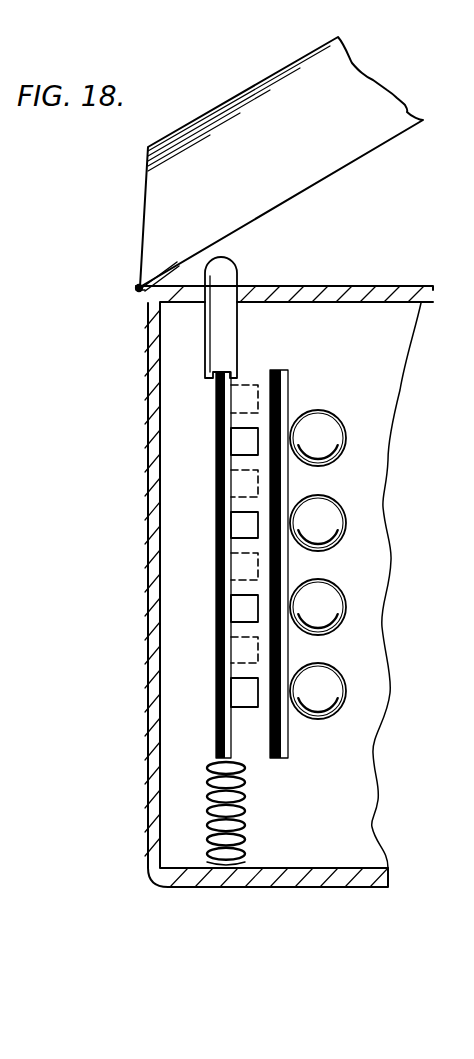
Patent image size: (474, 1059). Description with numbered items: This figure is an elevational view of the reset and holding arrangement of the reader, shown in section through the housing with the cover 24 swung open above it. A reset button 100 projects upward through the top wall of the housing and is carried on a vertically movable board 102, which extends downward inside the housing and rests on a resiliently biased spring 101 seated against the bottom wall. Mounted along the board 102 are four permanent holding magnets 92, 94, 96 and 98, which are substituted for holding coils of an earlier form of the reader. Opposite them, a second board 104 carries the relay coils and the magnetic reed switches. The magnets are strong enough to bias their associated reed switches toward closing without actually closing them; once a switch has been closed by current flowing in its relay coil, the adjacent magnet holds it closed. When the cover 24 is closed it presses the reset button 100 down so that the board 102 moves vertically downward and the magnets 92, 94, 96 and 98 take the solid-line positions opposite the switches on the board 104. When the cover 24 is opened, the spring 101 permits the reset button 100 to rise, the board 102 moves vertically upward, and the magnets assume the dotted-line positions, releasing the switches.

The cover 24 is at (360, 156).
The reset button 100 is at (218, 273).
The board 102 is at (213, 760).
The spring 101 is at (213, 827).
The holding magnet 92 is at (235, 393).
The holding magnet 94 is at (245, 528).
The holding magnet 96 is at (235, 563).
The holding magnet 98 is at (235, 650).
The board 104 is at (285, 392).